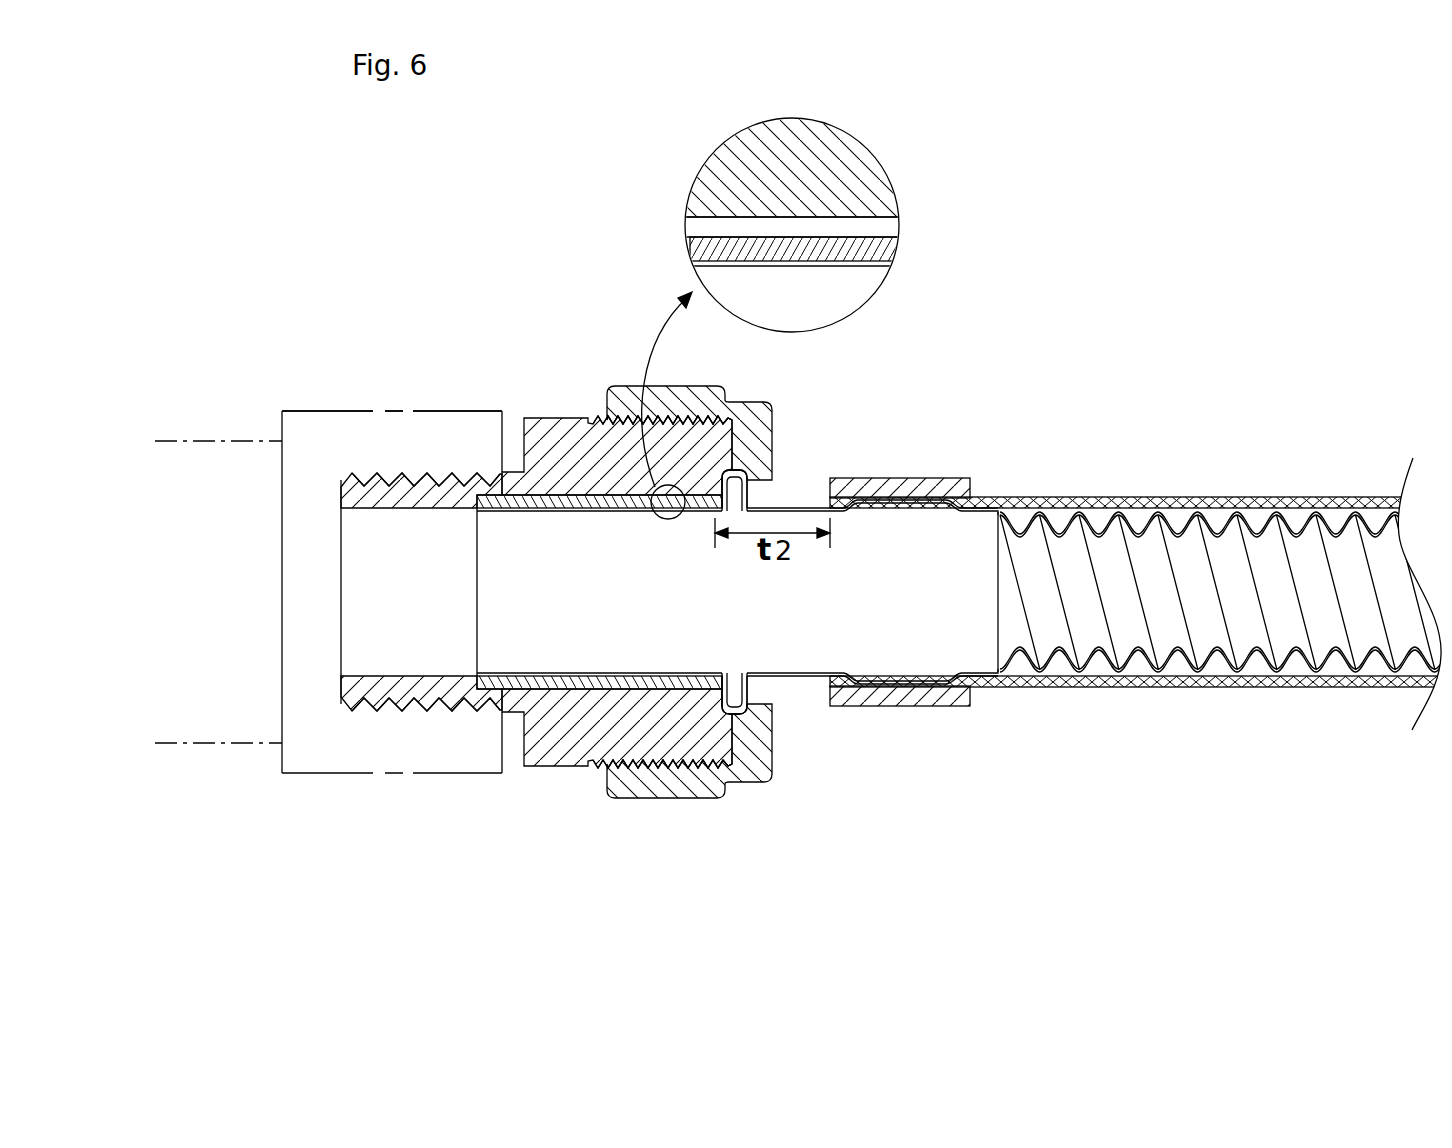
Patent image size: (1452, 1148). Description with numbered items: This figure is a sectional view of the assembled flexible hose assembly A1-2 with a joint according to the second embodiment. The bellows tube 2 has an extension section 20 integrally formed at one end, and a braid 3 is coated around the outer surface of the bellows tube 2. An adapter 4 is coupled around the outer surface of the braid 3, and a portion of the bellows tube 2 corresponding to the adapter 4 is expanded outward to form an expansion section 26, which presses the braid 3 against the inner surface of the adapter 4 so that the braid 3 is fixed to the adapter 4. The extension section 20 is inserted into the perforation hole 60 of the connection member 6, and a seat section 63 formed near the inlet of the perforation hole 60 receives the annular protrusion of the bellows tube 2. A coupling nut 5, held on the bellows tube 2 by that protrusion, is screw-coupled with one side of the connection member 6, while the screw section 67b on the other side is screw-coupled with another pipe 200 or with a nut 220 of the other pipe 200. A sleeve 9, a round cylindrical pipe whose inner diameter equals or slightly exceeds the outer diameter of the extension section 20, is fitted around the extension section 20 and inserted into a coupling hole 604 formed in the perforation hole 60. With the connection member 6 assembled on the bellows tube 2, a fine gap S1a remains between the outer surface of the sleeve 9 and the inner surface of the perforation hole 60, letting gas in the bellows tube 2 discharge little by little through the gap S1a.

The another pipe 200 is at (215, 440).
The nut of another pipe 220 is at (371, 411).
The perforation hole 60 is at (390, 645).
The screw section 67b is at (421, 473).
The extension section 20 is at (515, 678).
The connection member 6 is at (525, 418).
The sleeve 9 is at (550, 693).
The coupling nut 5 is at (628, 798).
The coupling hole 604 is at (627, 680).
The seat section 63 is at (765, 478).
The adapter 4 is at (901, 482).
The expansion section 26 is at (893, 683).
The bellows tube 2 is at (1138, 548).
The braid 3 is at (1231, 497).
The fine gap S1a is at (840, 225).
The flexible hose assembly with joint A1-2 is at (487, 252).